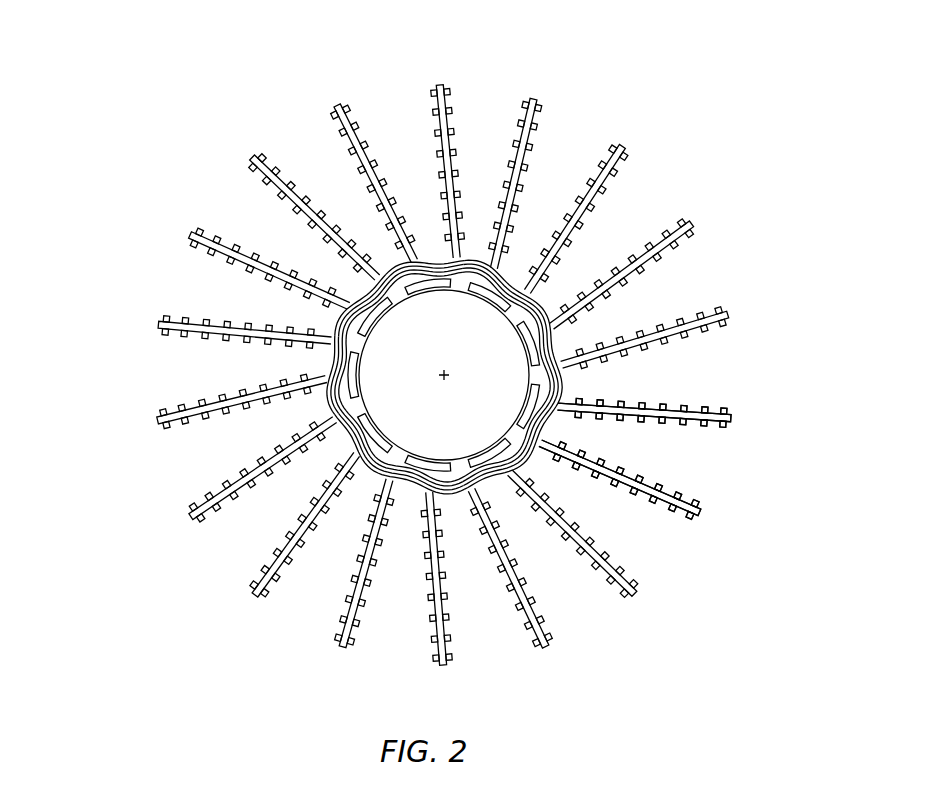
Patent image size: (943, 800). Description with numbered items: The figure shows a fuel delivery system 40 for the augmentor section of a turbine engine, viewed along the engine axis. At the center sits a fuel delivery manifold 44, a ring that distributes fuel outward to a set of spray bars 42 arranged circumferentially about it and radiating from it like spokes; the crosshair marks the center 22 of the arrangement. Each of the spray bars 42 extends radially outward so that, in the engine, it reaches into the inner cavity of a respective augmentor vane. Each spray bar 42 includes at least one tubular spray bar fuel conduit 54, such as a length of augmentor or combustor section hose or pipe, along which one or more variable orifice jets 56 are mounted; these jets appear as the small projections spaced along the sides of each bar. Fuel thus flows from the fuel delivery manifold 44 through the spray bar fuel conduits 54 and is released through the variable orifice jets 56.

The fuel delivery system 40 is at (451, 359).
The spray bars 42 is at (451, 375).
The fuel delivery manifold 44 is at (363, 347).
The central axis 22 is at (447, 378).
The spray bar fuel conduit 54 is at (733, 423).
The variable orifice jets 56 is at (692, 427).